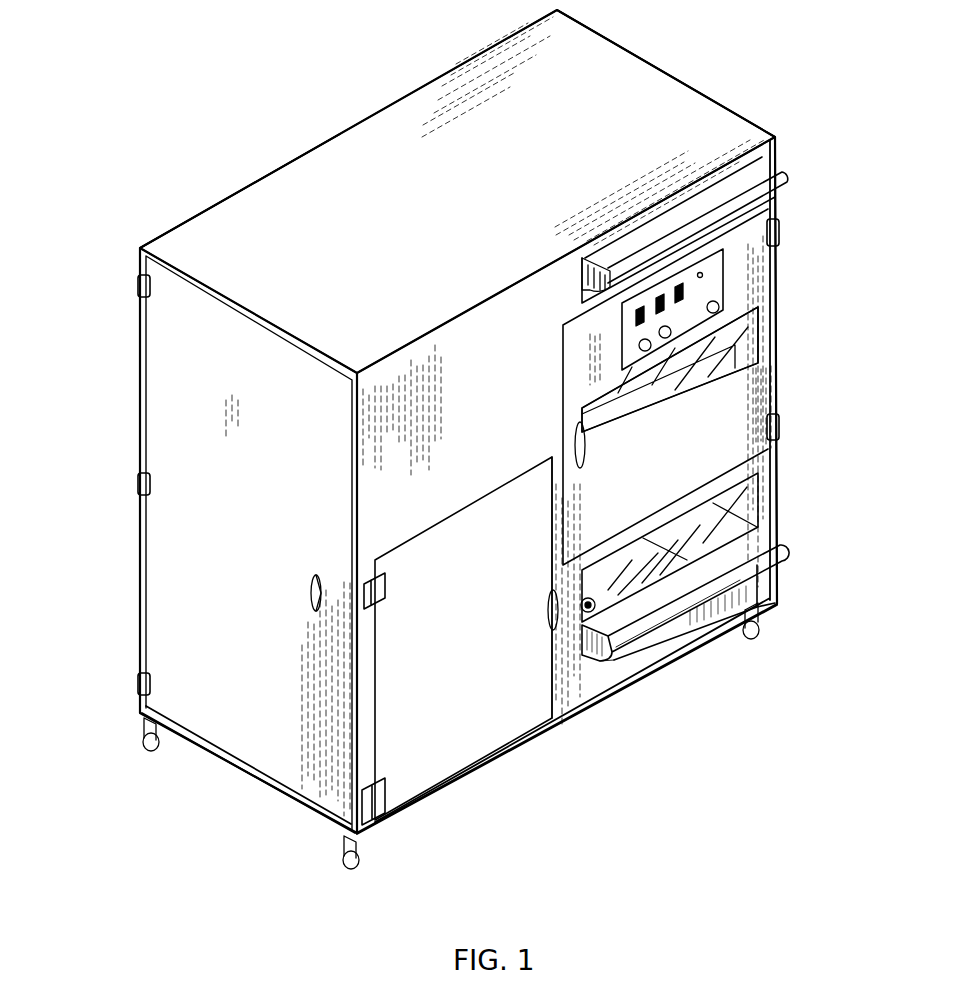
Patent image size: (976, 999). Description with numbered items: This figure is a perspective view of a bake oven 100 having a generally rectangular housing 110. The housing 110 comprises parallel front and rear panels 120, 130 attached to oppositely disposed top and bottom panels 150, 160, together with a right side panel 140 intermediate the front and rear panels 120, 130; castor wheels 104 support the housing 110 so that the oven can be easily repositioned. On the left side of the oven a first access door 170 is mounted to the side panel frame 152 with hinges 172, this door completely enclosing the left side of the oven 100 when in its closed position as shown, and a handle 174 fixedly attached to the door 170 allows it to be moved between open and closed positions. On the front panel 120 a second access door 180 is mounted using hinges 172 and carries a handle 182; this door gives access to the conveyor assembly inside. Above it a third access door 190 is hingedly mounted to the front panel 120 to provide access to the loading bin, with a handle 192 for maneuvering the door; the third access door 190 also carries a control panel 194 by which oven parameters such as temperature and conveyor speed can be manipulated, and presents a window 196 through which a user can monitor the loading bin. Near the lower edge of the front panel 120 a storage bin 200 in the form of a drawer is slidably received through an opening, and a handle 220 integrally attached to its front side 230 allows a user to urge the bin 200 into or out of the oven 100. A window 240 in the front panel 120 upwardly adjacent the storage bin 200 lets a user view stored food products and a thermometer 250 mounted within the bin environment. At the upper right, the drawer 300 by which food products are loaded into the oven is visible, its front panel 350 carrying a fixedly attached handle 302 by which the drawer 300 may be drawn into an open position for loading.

The bake oven 100 is at (250, 112).
The castor wheels 104 is at (140, 745).
The housing 110 is at (652, 62).
The front panel 120 is at (567, 482).
The rear panel 130 is at (335, 128).
The right side panel 140 is at (718, 100).
The top panel 150 is at (457, 191).
The side panel frame 152 is at (247, 778).
The bottom panel 160 is at (450, 790).
The first access door 170 is at (248, 544).
The hinges 172 is at (137, 278).
The handle 174 is at (311, 590).
The second access door 180 is at (463, 638).
The handle 182 is at (545, 620).
The third access door 190 is at (665, 387).
The handle 192 is at (574, 441).
The control panel 194 is at (712, 283).
The window 196 is at (745, 337).
The storage bin 200 is at (763, 585).
The handle 220 is at (615, 645).
The front side 230 is at (633, 660).
The window 240 is at (742, 498).
The thermometer 250 is at (592, 599).
The drawer 300 is at (768, 158).
The handle 302 is at (790, 176).
The front panel 350 is at (614, 252).